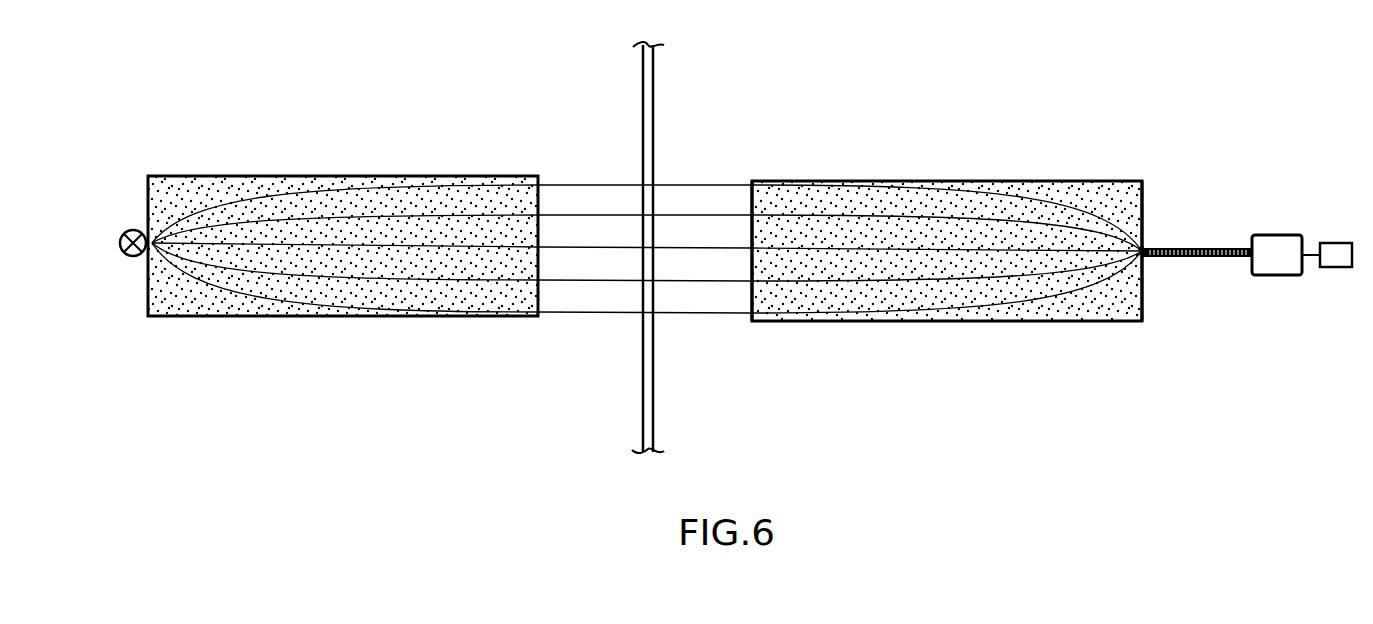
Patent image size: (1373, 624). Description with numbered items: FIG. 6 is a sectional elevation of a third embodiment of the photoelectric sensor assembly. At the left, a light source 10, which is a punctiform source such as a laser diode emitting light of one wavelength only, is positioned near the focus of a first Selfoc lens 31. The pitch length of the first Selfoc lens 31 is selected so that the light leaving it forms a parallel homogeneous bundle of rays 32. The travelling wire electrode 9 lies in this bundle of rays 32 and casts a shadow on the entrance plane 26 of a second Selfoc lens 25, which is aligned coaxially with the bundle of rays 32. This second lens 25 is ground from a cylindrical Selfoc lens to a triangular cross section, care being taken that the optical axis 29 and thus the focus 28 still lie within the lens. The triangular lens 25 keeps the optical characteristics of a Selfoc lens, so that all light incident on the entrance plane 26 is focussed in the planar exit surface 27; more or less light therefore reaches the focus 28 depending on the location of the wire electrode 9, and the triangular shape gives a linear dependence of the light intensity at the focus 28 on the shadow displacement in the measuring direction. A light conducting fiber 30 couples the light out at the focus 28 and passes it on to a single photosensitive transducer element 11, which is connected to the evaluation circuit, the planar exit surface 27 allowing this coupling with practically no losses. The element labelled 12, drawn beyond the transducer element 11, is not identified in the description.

The travelling wire electrode 9 is at (656, 72).
The light source 10 is at (128, 231).
The photosensitive transducer element 11 is at (1277, 235).
The indicator / readout 12 is at (1335, 268).
The Selfoc lens 25 is at (941, 172).
The entrance plane 26 is at (748, 201).
The planar exit surface 27 is at (1144, 200).
The focus 28 is at (1146, 238).
The optical axis 29 is at (270, 246).
The light conducting fiber 30 is at (1195, 260).
The first Selfoc lens 31 is at (358, 170).
The bundle of rays 32 is at (588, 172).